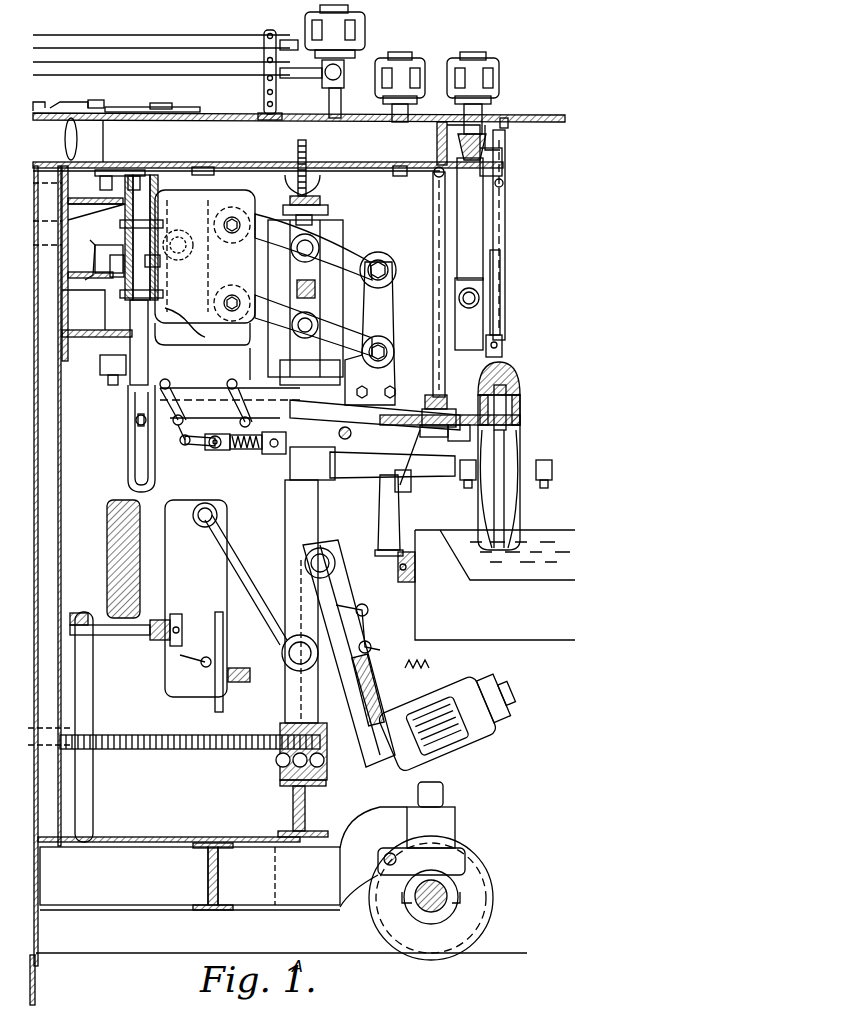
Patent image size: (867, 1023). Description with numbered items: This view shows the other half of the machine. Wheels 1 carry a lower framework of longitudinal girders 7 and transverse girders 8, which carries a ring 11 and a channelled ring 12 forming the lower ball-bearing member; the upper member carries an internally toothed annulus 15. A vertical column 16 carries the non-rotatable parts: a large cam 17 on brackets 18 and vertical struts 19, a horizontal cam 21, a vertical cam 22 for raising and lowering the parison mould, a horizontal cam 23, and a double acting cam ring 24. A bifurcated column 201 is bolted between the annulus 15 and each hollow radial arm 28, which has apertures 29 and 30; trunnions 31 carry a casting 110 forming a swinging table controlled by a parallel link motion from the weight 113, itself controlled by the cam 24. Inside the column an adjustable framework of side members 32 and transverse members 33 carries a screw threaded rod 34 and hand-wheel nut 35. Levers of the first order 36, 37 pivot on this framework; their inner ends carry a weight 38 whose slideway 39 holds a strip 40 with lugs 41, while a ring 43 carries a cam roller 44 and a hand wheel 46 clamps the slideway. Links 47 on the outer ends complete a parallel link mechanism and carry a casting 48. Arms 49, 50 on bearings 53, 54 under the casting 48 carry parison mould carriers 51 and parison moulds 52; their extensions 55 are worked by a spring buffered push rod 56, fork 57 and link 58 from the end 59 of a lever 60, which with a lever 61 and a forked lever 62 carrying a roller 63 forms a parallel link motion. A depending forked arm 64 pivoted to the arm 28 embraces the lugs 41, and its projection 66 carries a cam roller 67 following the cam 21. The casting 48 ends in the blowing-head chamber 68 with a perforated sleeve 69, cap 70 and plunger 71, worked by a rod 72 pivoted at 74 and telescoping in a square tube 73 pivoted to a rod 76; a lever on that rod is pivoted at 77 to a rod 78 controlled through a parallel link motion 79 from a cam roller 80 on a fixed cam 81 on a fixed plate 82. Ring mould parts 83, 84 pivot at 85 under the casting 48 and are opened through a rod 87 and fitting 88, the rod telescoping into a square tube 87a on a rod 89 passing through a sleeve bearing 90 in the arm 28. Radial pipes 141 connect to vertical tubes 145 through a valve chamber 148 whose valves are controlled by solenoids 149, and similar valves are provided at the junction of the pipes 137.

The wheels 1 is at (488, 890).
The longitudinally disposed girders 7 is at (189, 873).
The transverse girders 8 is at (224, 876).
The ring 11 is at (305, 810).
The channelled ring 12 is at (327, 770).
The internally toothed annulus 15 is at (328, 740).
The vertical column 16 is at (60, 478).
The large cam 17 is at (150, 640).
The brackets 18 is at (110, 635).
The vertical struts 19 is at (88, 712).
The horizontal cam 21 is at (100, 355).
The vertical cam 22 is at (93, 250).
The horizontal cam 23 is at (108, 190).
The double acting cam ring 24 is at (215, 695).
The hollow arm 28 is at (299, 142).
The aperture 29 is at (308, 162).
The aperture 30 is at (502, 155).
The trunnions 31 is at (305, 550).
The side members 32 is at (343, 228).
The transverse members 33 is at (318, 288).
The screw threaded rod 34 is at (300, 162).
The nut 35 is at (312, 203).
The lever of the first order 36 is at (345, 262).
The lever of the first order 37 is at (338, 334).
The weight 38 is at (205, 256).
The inner edge slideway 39 is at (202, 334).
The strip 40 is at (191, 326).
The projecting lugs 41 is at (125, 226).
The ring 43 is at (165, 270).
The cam roller 44 is at (118, 280).
The hand wheel 46 is at (180, 235).
The links 47 is at (385, 325).
The casting 48 is at (251, 364).
The arm 49 is at (345, 416).
The arm 50 is at (392, 504).
The parison mould carriers 51 is at (552, 470).
The parison moulds 52 is at (520, 508).
The bearing 53 is at (340, 431).
The bearing 54 is at (312, 463).
The extensions 55 is at (276, 455).
The spring buffered push rod 56 is at (248, 450).
The fork 57 is at (225, 452).
The pivoted link 58 is at (205, 448).
The end of lever 59 is at (184, 445).
The lever 60 is at (178, 400).
The lever 61 is at (248, 410).
The lever 62 is at (230, 408).
The roller 63 is at (136, 422).
The depending arm 64 is at (148, 352).
The projection 66 is at (135, 458).
The cam roller 67 is at (102, 370).
The chamber 68 is at (520, 413).
The bushing or sleeve 69 is at (520, 423).
The cap 70 is at (512, 378).
The plunger 71 is at (520, 395).
The rod 72 is at (500, 316).
The square tube 73 is at (506, 228).
The pivot 74 is at (500, 352).
The rod 76 is at (495, 150).
The pivot 77 is at (510, 118).
The rod 78 is at (418, 118).
The parallel link motion 79 is at (152, 99).
The cam roller 80 is at (100, 100).
The fixed cam 81 is at (66, 103).
The fixed plate 82 is at (40, 102).
The ring mould part 83 is at (445, 440).
The ring mould part 84 is at (407, 462).
The pivot 85 is at (438, 440).
The rod 87 is at (445, 345).
The square tube 87a is at (417, 215).
The fitting 88 is at (440, 392).
The rod 89 is at (437, 150).
The sleeve bearing 90 is at (437, 140).
The casting 110 is at (290, 600).
The weight 113 is at (167, 598).
The pipes 137 is at (147, 40).
The radial pipes 141 is at (240, 72).
The vertical tubes 145 is at (341, 105).
The valve chamber 148 is at (343, 74).
The solenoids 149 is at (348, 26).
The bifurcated column 201 is at (318, 512).